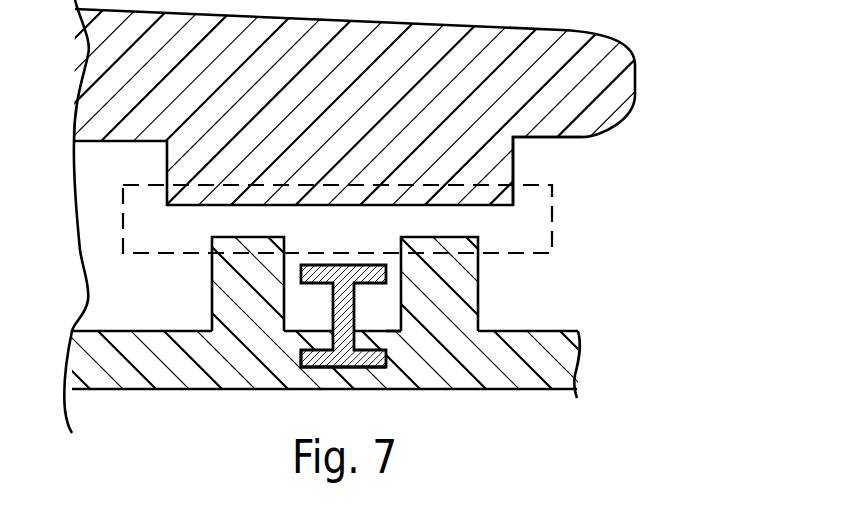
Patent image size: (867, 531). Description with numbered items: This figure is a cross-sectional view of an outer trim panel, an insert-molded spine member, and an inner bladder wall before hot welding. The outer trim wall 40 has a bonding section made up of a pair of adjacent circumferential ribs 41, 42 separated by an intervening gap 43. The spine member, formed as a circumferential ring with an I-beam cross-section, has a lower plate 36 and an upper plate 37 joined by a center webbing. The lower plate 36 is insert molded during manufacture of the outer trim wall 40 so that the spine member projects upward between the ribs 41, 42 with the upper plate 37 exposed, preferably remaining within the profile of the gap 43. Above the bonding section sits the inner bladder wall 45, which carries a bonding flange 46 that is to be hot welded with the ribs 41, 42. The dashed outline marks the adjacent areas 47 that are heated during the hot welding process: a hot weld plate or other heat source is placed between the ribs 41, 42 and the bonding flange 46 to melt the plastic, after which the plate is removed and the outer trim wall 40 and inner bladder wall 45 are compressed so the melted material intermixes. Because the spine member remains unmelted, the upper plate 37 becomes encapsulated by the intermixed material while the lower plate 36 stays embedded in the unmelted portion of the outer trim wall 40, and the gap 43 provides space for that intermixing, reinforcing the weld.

The lower plate 36 is at (300, 363).
The upper plate 37 is at (336, 264).
The outer trim wall 40 is at (142, 372).
The rib 41 is at (240, 280).
The rib 42 is at (442, 293).
The gap 43 is at (383, 305).
The inner bladder wall 45 is at (620, 83).
The bonding flange 46 is at (482, 163).
The adjacent areas 47 is at (553, 222).